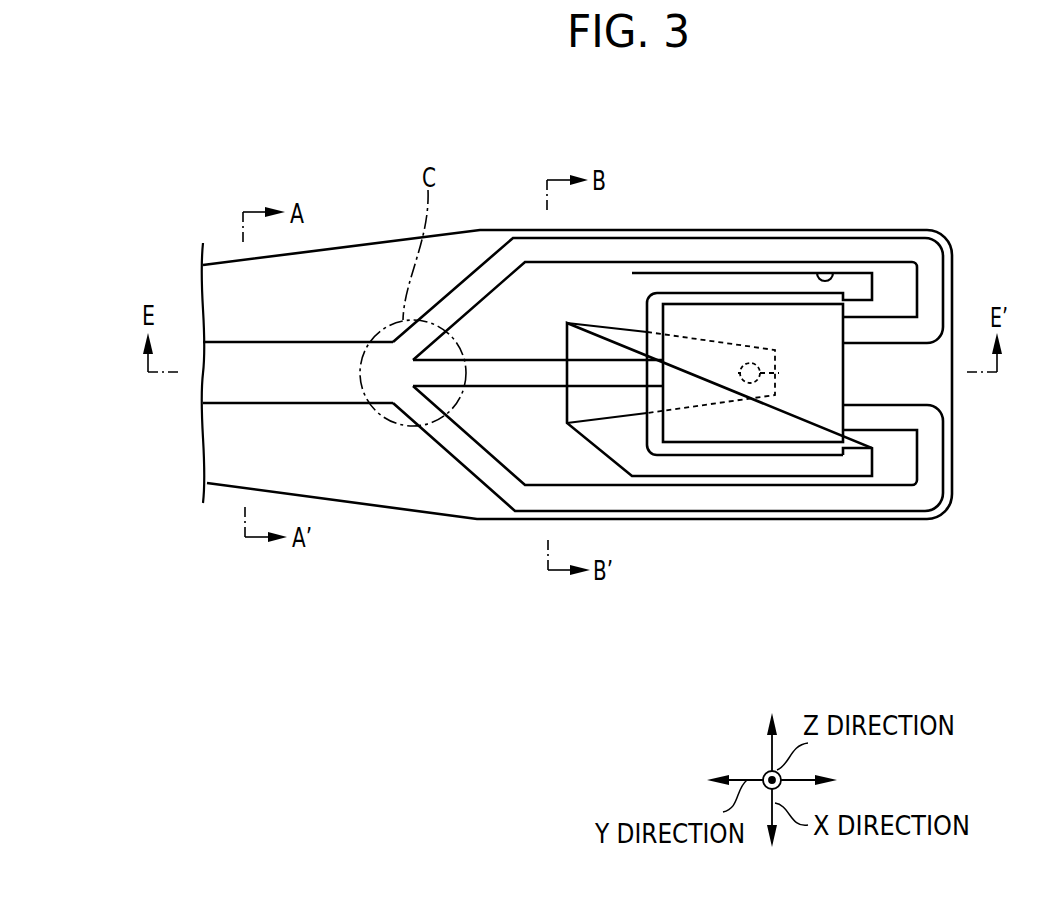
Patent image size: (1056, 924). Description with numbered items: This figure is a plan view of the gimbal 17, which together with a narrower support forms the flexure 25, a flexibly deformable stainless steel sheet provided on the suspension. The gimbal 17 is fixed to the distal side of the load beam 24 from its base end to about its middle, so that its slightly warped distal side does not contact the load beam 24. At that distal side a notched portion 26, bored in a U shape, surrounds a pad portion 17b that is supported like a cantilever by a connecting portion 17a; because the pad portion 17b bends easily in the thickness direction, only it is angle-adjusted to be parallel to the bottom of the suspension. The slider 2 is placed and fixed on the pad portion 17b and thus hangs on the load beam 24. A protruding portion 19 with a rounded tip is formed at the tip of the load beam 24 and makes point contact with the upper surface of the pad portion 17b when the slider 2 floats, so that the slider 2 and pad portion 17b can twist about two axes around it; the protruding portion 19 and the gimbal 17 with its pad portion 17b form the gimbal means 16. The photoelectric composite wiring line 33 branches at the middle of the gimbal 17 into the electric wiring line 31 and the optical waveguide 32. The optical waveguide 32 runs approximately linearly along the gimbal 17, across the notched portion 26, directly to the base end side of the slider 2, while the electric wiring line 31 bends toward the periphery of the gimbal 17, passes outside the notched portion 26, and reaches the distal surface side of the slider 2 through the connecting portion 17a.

The slider 2 is at (750, 325).
The gimbal means 16 is at (805, 468).
The gimbal 17 is at (353, 262).
The connecting portion 17a is at (918, 373).
The pad portion 17b is at (730, 448).
The protruding portion 19 is at (777, 373).
The load beam 24 is at (618, 340).
The flexure 25 is at (793, 222).
The notched portion 26 is at (832, 270).
The electric wiring line 31 is at (857, 497).
The optical waveguide 32 is at (612, 388).
The photoelectric composite wiring line 33 is at (334, 386).